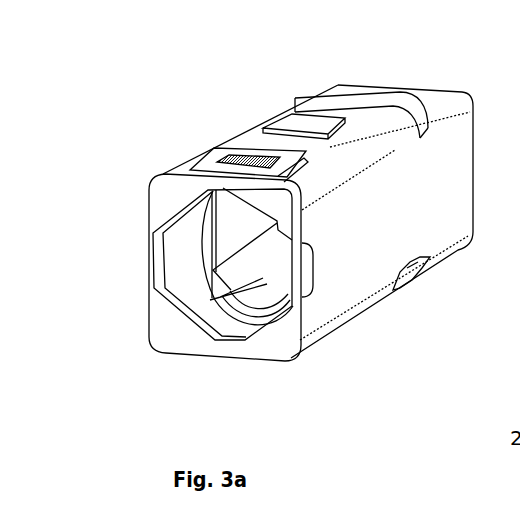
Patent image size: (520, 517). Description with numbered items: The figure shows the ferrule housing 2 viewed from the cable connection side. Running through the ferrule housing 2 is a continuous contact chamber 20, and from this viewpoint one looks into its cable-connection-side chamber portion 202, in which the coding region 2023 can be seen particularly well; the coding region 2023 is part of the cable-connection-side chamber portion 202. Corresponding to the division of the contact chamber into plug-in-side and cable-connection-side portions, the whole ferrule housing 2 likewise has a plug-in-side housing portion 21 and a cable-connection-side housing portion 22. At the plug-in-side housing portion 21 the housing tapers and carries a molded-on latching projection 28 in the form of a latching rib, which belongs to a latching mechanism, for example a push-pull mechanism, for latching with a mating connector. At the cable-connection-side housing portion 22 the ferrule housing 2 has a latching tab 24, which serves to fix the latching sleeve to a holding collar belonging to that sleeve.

The ferrule housing 2 is at (116, 168).
The continuous contact chamber 20 is at (172, 252).
The cable-connection-side chamber portion 202 is at (193, 277).
The coding region 2023 is at (238, 290).
The plug-in-side housing portion 21 is at (435, 200).
The cable-connection-side housing portion 22 is at (345, 248).
The latching tab 24 is at (213, 152).
The latching projection 28 is at (342, 102).